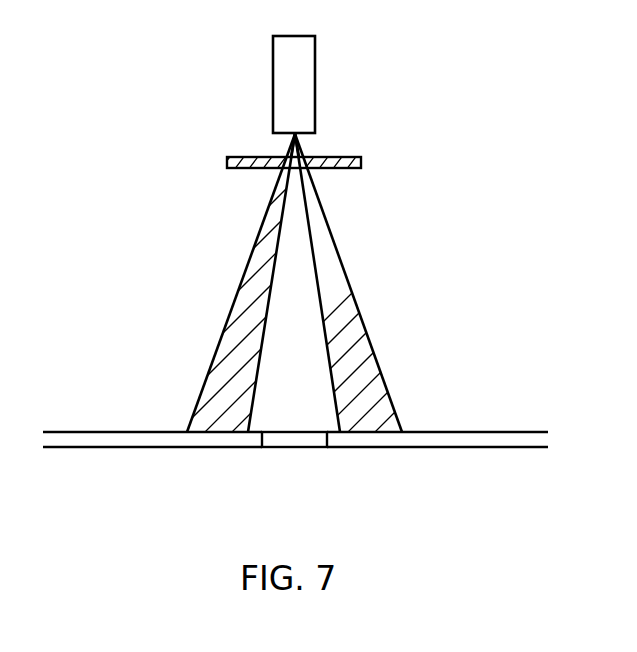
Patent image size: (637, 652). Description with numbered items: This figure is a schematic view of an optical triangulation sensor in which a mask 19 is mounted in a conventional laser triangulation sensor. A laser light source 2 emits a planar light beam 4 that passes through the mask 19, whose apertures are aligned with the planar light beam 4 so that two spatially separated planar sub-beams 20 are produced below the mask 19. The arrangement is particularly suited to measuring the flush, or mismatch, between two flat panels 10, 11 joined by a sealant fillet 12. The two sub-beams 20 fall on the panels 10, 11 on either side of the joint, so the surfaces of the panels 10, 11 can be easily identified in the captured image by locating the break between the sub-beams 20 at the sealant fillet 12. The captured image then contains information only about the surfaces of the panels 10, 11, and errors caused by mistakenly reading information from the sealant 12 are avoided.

The laser light source 2 is at (300, 88).
The planar light beam 4 is at (298, 150).
The mask 19 is at (345, 168).
The planar sub-beams 20 is at (257, 302).
The flat panel 10 is at (103, 442).
The flat panel 11 is at (485, 440).
The sealant fillet 12 is at (292, 440).